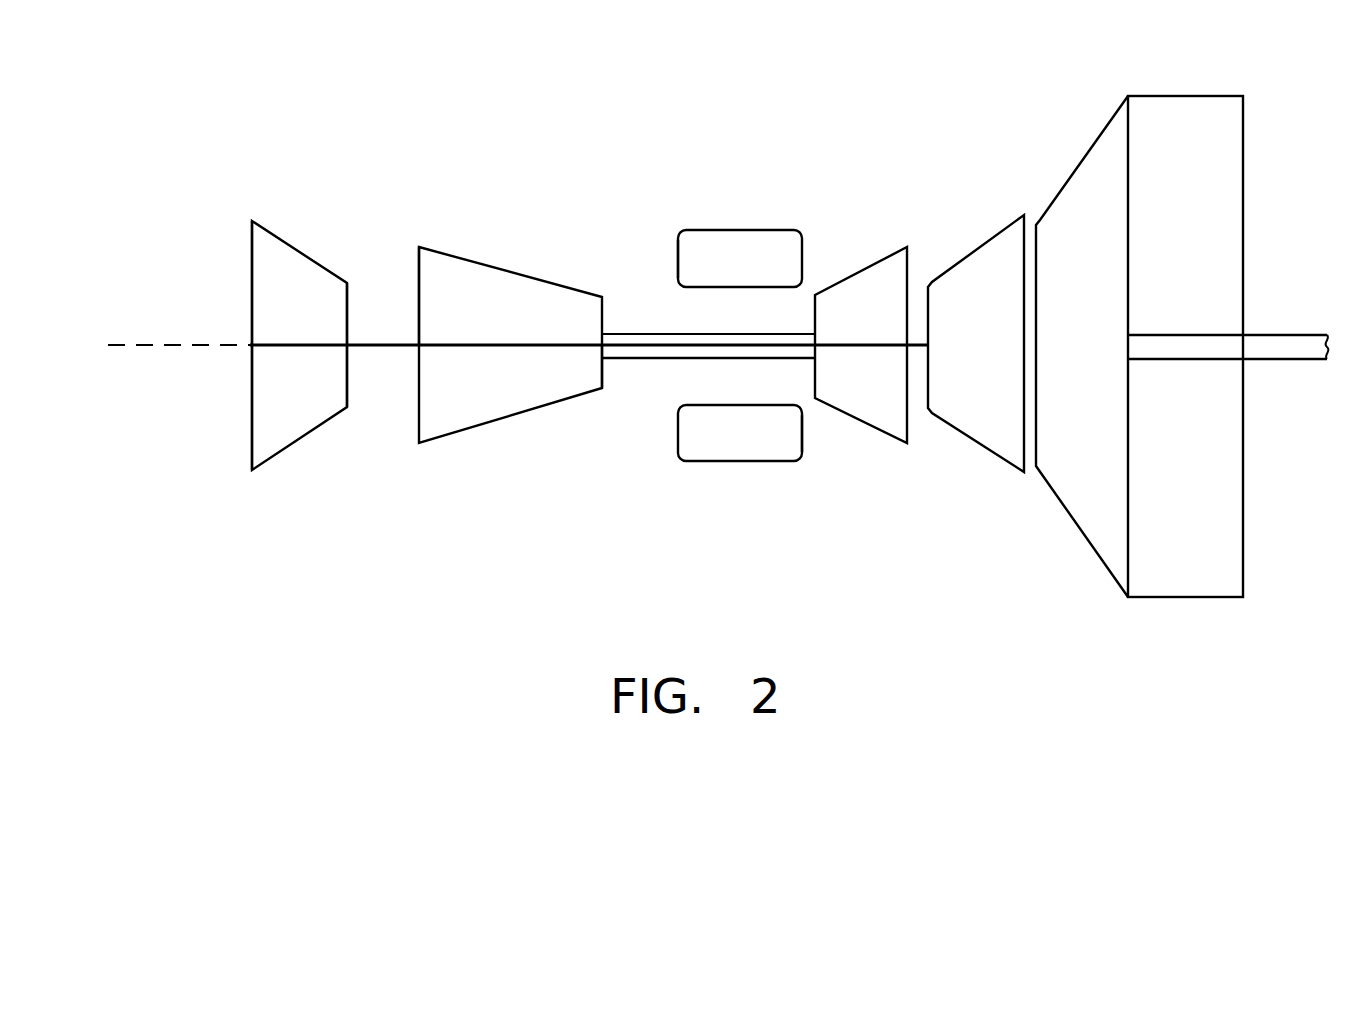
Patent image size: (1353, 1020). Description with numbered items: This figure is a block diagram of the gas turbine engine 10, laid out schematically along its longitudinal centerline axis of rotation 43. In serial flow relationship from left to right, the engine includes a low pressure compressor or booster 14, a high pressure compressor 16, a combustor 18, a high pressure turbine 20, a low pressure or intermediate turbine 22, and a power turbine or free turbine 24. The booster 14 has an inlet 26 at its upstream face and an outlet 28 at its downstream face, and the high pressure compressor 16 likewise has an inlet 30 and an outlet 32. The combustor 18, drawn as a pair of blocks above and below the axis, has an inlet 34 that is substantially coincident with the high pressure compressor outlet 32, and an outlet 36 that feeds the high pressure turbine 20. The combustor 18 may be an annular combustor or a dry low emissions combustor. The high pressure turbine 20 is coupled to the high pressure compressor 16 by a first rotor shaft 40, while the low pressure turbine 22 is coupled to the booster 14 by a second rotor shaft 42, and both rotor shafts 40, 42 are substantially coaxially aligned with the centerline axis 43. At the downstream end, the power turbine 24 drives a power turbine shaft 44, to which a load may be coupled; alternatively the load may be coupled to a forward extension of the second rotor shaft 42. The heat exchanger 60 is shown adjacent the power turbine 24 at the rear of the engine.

The gas turbine engine 10 is at (921, 68).
The low pressure compressor or booster 14 is at (275, 232).
The high pressure compressor 16 is at (447, 252).
The combustor 18 is at (725, 230).
The high pressure turbine 20 is at (867, 427).
The low pressure turbine 22 is at (963, 438).
The power turbine 24 is at (1102, 558).
The inlet 26 is at (251, 260).
The outlet 28 is at (347, 283).
The inlet 30 is at (419, 330).
The outlet 32 is at (603, 390).
The inlet 34 is at (678, 242).
The outlet 36 is at (802, 433).
The first rotor shaft 40 is at (687, 360).
The second rotor shaft 42 is at (402, 350).
The longitudinal centerline axis of rotation 43 is at (173, 343).
The power turbine shaft 44 is at (1260, 332).
The heat exchanger 60 is at (1183, 597).